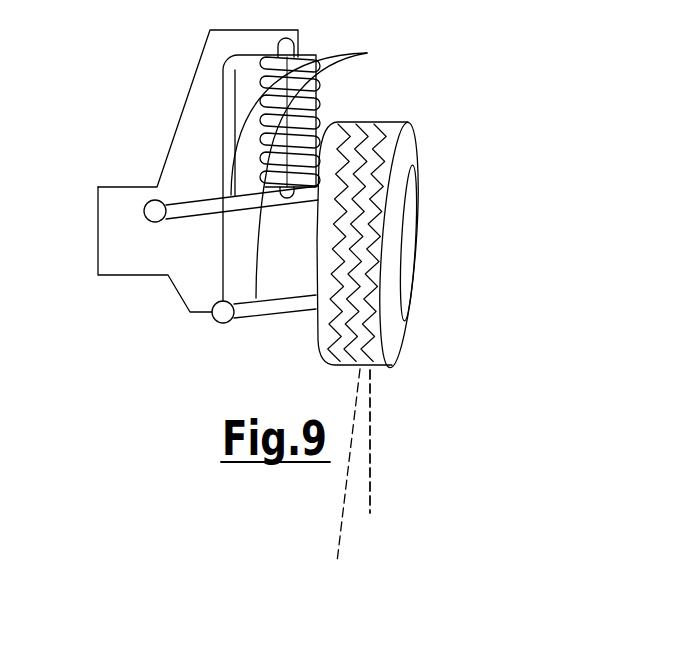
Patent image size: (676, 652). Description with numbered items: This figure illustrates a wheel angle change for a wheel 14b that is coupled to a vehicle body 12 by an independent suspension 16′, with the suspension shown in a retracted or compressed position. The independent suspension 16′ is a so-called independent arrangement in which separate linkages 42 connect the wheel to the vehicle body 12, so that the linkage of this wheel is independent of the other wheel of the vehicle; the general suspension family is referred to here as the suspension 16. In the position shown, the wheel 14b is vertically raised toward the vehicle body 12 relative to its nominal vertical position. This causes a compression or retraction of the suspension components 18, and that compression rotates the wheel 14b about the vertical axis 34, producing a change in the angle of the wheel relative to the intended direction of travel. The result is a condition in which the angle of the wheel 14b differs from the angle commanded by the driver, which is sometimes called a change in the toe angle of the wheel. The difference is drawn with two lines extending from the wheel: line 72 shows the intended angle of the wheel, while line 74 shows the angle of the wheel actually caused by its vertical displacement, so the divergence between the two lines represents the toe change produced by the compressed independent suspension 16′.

The vehicle body 12 is at (188, 96).
The suspension components 18 is at (335, 118).
The linkages 42 is at (347, 170).
The wheel 14b is at (387, 368).
The independent suspension 16′ is at (223, 350).
The suspension assembly 16 is at (223, 356).
The vertical axis 34 is at (370, 477).
The line showing intended angle of the wheel 72 is at (441, 446).
The line showing angle of the wheel caused by vertical displacement 74 is at (343, 522).